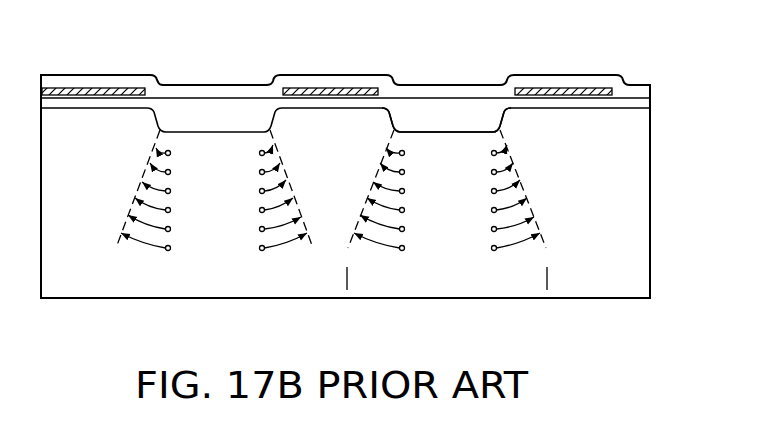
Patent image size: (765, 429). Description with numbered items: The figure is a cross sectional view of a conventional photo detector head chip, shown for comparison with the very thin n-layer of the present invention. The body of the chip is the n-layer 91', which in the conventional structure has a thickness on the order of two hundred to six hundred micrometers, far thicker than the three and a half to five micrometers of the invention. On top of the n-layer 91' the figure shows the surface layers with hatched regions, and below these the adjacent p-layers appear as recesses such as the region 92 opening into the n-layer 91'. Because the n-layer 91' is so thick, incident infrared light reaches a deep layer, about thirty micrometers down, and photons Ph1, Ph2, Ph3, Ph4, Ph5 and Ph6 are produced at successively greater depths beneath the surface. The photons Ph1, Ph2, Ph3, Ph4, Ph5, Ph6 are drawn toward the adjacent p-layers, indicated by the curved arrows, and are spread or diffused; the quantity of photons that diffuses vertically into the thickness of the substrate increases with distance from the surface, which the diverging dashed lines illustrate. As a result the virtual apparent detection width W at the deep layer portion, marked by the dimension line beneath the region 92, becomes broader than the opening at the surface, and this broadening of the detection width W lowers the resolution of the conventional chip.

The n-layer 91' is at (372, 186).
The groove / trench 92 is at (452, 127).
The virtual apparent detection width W is at (544, 278).
The photon Ph1 is at (331, 152).
The photon Ph2 is at (331, 171).
The photon Ph3 is at (331, 190).
The photon Ph4 is at (331, 209).
The photon Ph5 is at (331, 227).
The photon Ph6 is at (330, 245).